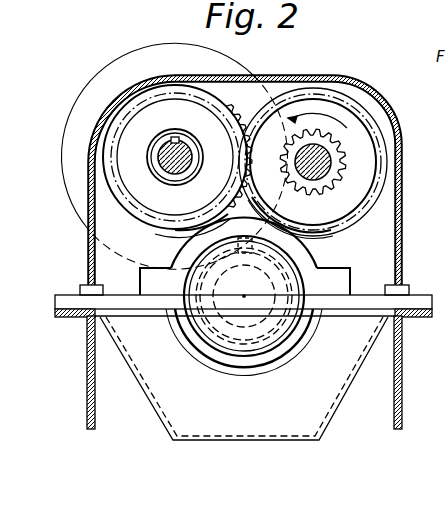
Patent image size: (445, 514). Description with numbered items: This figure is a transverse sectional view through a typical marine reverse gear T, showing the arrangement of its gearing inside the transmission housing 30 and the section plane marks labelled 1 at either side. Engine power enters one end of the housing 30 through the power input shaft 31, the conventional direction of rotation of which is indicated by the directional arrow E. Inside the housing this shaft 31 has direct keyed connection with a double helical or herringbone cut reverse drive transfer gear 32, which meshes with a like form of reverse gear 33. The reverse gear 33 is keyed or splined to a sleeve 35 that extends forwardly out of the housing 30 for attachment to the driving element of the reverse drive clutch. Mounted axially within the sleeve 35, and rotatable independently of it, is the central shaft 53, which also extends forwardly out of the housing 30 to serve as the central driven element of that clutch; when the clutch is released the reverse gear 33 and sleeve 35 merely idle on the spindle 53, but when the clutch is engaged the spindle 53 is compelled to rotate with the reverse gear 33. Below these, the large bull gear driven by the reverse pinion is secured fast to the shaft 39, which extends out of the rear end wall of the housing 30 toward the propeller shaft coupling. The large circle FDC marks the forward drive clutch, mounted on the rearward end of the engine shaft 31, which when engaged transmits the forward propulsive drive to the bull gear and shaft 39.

The transmission housing 30 is at (190, 76).
The marine reverse gear T is at (302, 76).
The forward drive clutch FDC is at (118, 72).
The power input shaft 31 is at (163, 153).
The reverse drive transfer gear 32 is at (212, 205).
The reverse gear 33 is at (268, 200).
The central shaft 53 is at (318, 152).
The sleeve 35 is at (253, 241).
The shaft 39 is at (244, 330).
The directional arrow E is at (203, 120).
The section line 1- 1 is at (47, 177).